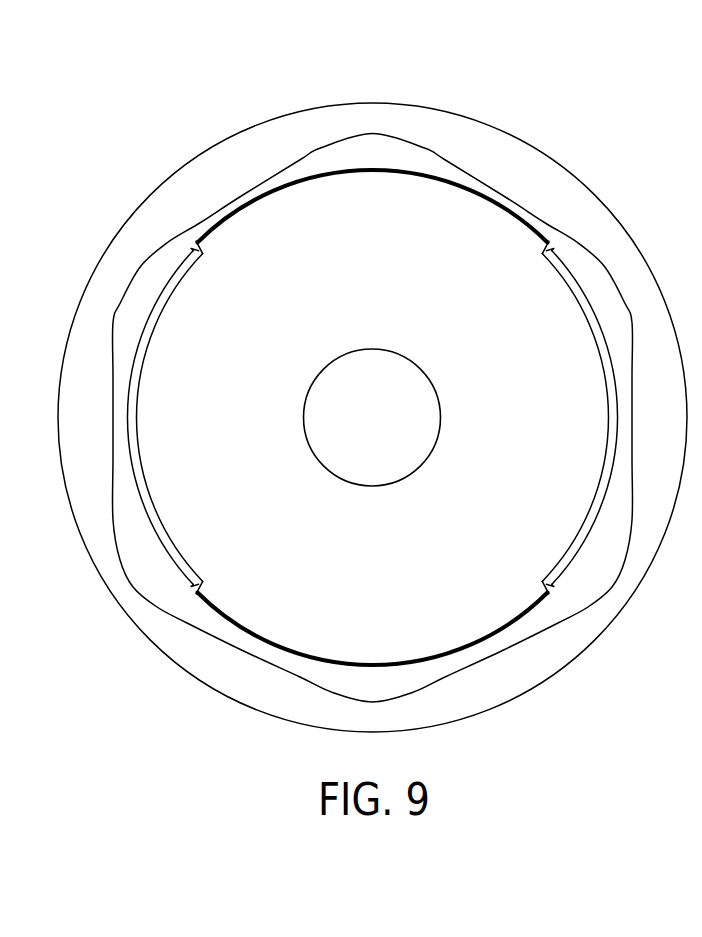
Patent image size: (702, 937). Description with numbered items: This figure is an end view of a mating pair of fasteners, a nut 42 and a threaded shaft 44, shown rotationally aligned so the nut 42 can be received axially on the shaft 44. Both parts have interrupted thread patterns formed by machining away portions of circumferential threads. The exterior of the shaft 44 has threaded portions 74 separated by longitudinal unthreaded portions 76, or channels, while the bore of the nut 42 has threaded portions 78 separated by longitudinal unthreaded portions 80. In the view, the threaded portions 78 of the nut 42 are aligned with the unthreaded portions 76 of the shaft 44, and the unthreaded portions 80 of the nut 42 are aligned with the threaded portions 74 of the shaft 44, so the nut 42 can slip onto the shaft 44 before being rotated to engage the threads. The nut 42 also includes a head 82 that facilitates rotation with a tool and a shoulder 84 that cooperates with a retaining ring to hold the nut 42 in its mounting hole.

The nut 42 is at (199, 155).
The threaded shaft 44 is at (200, 303).
The threaded portions 74 is at (440, 174).
The longitudinal unthreaded portions 76 is at (140, 355).
The threaded portions 78 is at (567, 272).
The longitudinal unthreaded portions 80 is at (385, 168).
The head 82 is at (143, 548).
The shoulder 84 is at (171, 630).